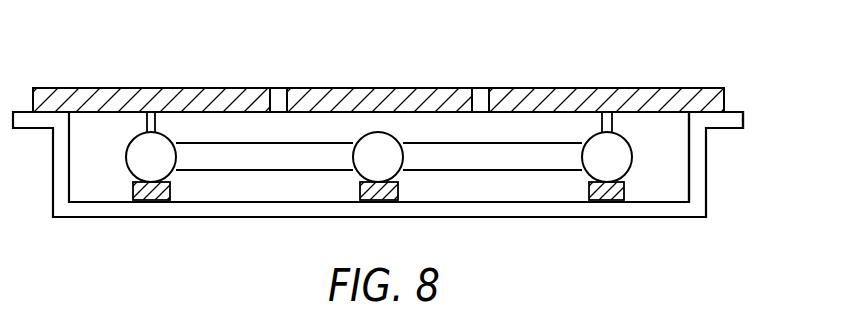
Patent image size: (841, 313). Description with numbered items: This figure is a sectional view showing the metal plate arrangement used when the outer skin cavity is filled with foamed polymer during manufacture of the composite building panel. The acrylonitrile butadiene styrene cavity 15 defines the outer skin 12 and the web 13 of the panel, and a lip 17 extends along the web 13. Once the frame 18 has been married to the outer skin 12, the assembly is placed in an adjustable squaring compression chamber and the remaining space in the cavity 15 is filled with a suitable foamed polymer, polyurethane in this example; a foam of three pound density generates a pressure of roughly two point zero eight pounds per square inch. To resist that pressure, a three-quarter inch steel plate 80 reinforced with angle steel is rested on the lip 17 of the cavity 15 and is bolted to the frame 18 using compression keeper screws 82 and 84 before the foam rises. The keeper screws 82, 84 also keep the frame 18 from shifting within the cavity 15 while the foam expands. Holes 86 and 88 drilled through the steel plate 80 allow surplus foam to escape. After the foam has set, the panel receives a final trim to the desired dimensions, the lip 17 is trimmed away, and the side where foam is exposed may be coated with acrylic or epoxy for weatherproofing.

The outer skin 12 is at (613, 217).
The web 13 is at (697, 156).
The cavity 15 is at (709, 197).
The lip 17 is at (733, 111).
The frame 18 is at (515, 173).
The steel plate 80 is at (533, 87).
The keeper screw 82 is at (612, 118).
The keeper screw 84 is at (157, 118).
The drilled hole 86 is at (277, 86).
The drilled hole 88 is at (481, 86).